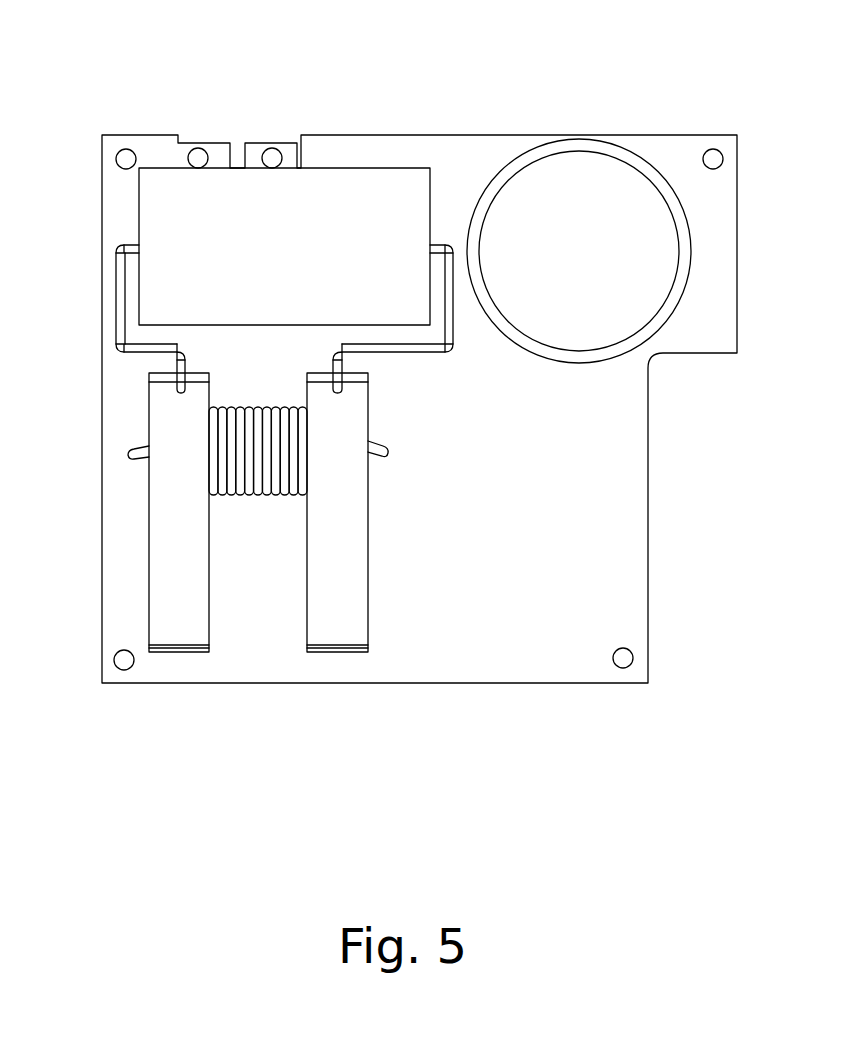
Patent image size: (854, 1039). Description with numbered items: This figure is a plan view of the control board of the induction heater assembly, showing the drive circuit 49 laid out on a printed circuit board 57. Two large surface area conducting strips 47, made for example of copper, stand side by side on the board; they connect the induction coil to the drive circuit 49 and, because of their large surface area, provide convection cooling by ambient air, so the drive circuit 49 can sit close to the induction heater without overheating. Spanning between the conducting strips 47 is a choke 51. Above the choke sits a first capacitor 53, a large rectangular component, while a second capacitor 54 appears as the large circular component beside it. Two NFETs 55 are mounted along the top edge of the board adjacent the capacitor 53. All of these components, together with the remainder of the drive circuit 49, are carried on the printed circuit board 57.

The conducting strips 47 is at (208, 559).
The drive circuit 49 is at (589, 720).
The choke 51 is at (233, 398).
The capacitor 53 is at (369, 187).
The capacitor 54 is at (581, 147).
The NFETs 55 is at (200, 148).
The printed circuit board 57 is at (562, 485).